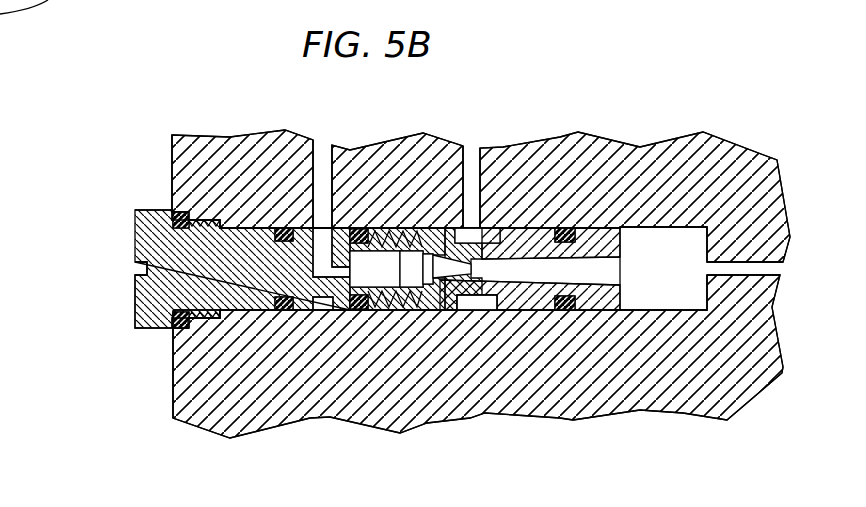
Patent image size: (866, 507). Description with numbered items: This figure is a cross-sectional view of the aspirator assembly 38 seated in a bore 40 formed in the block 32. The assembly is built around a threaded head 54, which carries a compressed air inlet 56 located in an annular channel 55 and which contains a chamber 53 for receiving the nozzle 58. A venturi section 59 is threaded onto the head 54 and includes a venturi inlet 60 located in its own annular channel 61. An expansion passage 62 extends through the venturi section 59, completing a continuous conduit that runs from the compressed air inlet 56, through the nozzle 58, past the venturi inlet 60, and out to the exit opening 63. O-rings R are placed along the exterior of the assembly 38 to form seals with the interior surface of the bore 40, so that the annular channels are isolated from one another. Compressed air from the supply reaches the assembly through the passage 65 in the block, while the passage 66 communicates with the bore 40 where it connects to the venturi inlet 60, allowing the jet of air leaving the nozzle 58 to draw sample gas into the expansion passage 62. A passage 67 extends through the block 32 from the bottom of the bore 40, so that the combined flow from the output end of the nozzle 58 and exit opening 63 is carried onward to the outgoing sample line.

The block 32 is at (617, 393).
The aspirator assembly 38 is at (118, 318).
The bore 40 is at (690, 232).
The chamber 53 is at (418, 232).
The threaded head 54 is at (134, 239).
The annular channel 55 is at (320, 302).
The compressed air inlet 56 is at (320, 245).
The nozzle 58 is at (426, 272).
The venturi section 59 is at (617, 260).
The venturi inlet 60 is at (502, 230).
The annular channel 61 is at (477, 307).
The expansion passage 62 is at (583, 258).
The exit opening 63 is at (620, 258).
The passage 65 is at (320, 143).
The passage 66 is at (473, 215).
The passage 67 is at (783, 270).
The O-rings R is at (283, 313).